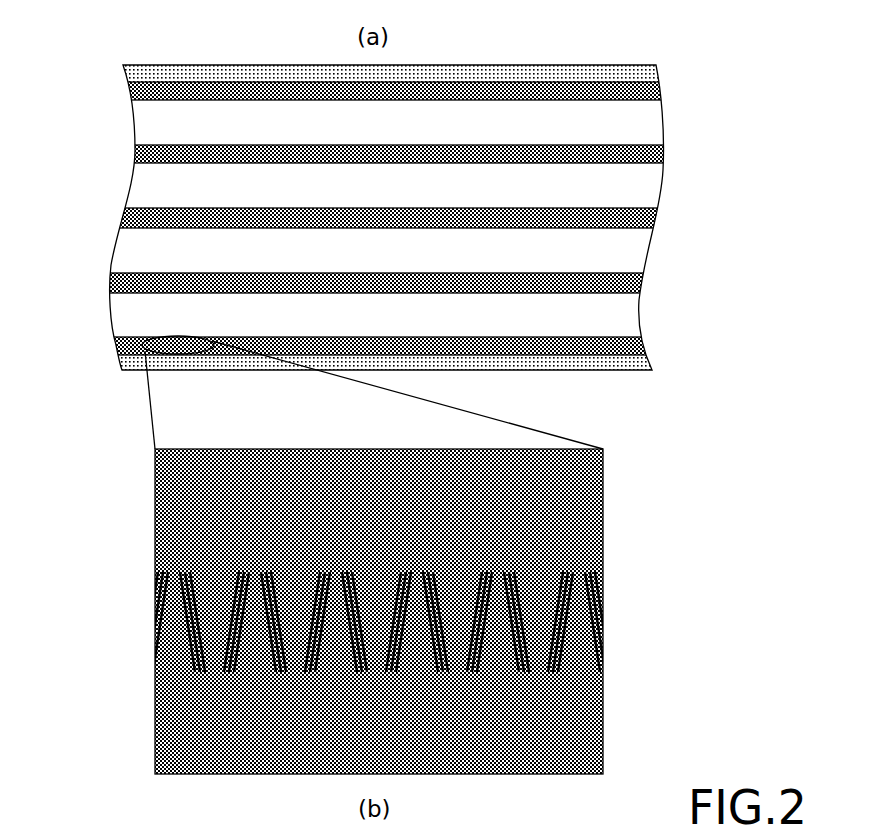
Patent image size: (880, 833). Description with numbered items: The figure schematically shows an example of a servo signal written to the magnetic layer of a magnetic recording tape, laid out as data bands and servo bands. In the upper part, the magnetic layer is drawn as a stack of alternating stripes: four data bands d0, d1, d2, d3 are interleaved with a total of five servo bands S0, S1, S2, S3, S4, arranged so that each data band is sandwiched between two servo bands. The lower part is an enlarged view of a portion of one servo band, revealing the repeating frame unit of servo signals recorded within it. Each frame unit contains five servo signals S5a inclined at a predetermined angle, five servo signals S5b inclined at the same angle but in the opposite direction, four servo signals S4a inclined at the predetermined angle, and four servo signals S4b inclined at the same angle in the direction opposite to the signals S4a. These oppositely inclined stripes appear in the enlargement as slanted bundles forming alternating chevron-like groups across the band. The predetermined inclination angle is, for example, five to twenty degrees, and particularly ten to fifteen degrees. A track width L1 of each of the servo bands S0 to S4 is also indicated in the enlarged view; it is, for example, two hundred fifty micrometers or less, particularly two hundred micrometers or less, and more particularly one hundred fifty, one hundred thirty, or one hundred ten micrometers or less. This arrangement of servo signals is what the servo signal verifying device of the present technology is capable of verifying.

The servo band S0 is at (130, 86).
The servo band S1 is at (134, 149).
The servo band S2 is at (126, 211).
The servo band S3 is at (111, 276).
The servo band S4 is at (117, 341).
The data band d0 is at (646, 255).
The data band d1 is at (659, 188).
The data band d2 is at (640, 316).
The data band d3 is at (664, 126).
The servo signal S4a is at (333, 568).
The servo signal S4b is at (356, 568).
The servo signal S5a is at (415, 566).
The servo signal S5b is at (440, 566).
The track width L1 is at (272, 662).